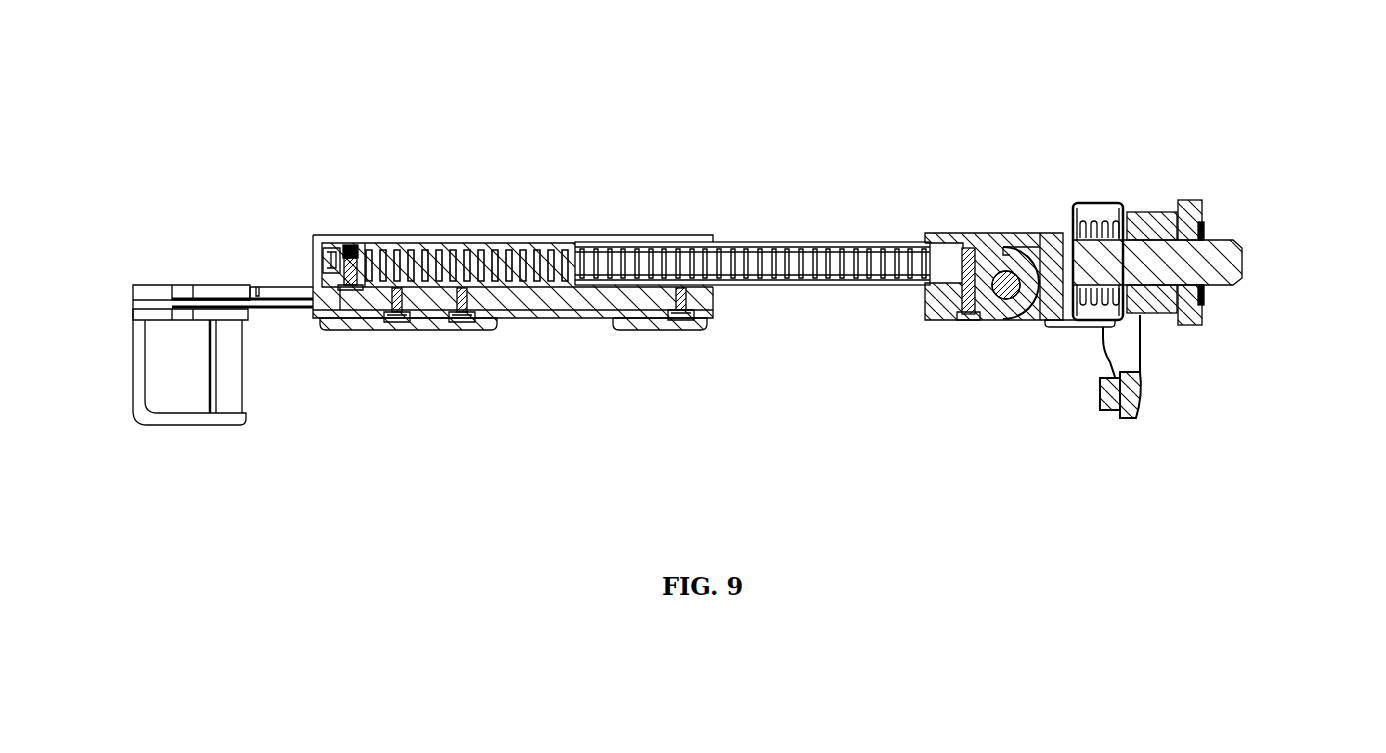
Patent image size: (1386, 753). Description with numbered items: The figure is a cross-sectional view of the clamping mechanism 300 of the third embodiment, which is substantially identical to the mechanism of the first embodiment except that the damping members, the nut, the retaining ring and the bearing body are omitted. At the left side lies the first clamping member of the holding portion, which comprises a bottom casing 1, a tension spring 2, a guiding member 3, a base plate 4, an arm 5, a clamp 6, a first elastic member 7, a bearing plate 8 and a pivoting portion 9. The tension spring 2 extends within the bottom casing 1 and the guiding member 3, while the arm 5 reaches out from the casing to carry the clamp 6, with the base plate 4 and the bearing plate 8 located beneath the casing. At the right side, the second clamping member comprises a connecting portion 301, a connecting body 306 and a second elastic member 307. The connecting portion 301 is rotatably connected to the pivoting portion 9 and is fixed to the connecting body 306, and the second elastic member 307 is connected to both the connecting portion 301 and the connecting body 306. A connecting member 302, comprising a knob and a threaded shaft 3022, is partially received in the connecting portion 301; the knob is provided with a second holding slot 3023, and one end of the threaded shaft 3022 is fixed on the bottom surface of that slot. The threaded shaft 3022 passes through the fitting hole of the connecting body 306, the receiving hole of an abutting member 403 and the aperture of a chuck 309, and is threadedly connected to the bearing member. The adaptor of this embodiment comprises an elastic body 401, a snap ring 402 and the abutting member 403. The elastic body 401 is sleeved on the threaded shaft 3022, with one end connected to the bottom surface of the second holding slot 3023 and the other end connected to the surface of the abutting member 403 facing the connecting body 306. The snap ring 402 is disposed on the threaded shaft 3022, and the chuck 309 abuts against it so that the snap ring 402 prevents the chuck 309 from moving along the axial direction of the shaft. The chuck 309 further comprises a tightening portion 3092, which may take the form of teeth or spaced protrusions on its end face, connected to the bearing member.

The clamping mechanism 300 is at (693, 42).
The bottom casing 1 is at (530, 236).
The tension spring 2 is at (880, 254).
The guiding member 3 is at (811, 244).
The base plate 4 is at (702, 296).
The arm 5 is at (291, 290).
The clamp 6 is at (230, 416).
The first elastic member 7 is at (640, 324).
The bearing plate 8 is at (545, 316).
The pivoting portion 9 is at (1010, 308).
The connecting portion 301 is at (1036, 238).
The connecting member 302 is at (1086, 208).
The connecting body 306 is at (1140, 398).
The second elastic member 307 is at (1102, 398).
The chuck 309 is at (1191, 201).
The elastic body 401 is at (1105, 220).
The snap ring 402 is at (1206, 232).
The abutting member 403 is at (1160, 314).
The threaded shaft 3022 is at (1242, 260).
The second holding slot 3023 is at (1100, 318).
The tightening portion 3092 is at (1206, 297).